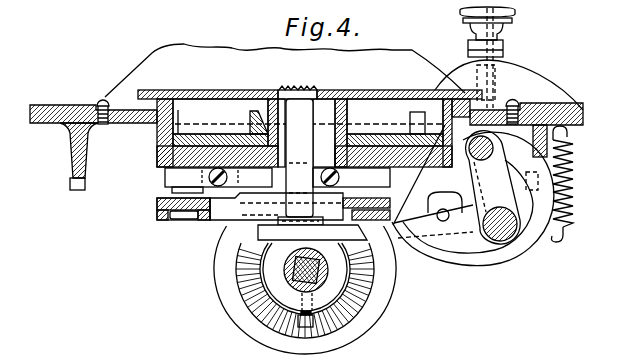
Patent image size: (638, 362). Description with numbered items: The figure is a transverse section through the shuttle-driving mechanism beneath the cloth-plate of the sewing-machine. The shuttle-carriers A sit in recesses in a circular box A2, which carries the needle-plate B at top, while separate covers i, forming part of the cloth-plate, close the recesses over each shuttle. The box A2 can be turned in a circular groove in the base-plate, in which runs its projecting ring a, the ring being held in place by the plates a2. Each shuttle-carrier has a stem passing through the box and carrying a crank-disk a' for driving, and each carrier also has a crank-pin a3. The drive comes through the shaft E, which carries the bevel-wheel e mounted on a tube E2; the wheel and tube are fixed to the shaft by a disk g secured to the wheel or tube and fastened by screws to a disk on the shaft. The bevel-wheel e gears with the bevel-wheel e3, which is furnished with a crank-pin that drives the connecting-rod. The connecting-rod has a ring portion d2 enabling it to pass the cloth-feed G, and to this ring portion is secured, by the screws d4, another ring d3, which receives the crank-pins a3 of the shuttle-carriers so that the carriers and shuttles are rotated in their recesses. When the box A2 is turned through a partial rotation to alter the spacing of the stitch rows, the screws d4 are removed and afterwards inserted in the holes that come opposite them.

The projecting ring a is at (306, 146).
The plates a2 is at (104, 101).
The crank-disk a' is at (262, 177).
The crank-pins a3 is at (193, 215).
The shuttle-carriers A is at (309, 118).
The circular box A2 is at (184, 141).
The needle-plate B is at (313, 119).
The covers i is at (200, 91).
The cloth-feed G is at (506, 276).
The ring portion d2 is at (156, 218).
The ring d3 is at (156, 203).
The screws d4 is at (392, 250).
The bevel-wheel e is at (247, 298).
The bevel-wheel e3 is at (258, 224).
The shaft E is at (296, 272).
The tube E2 is at (305, 285).
The disk g is at (305, 290).